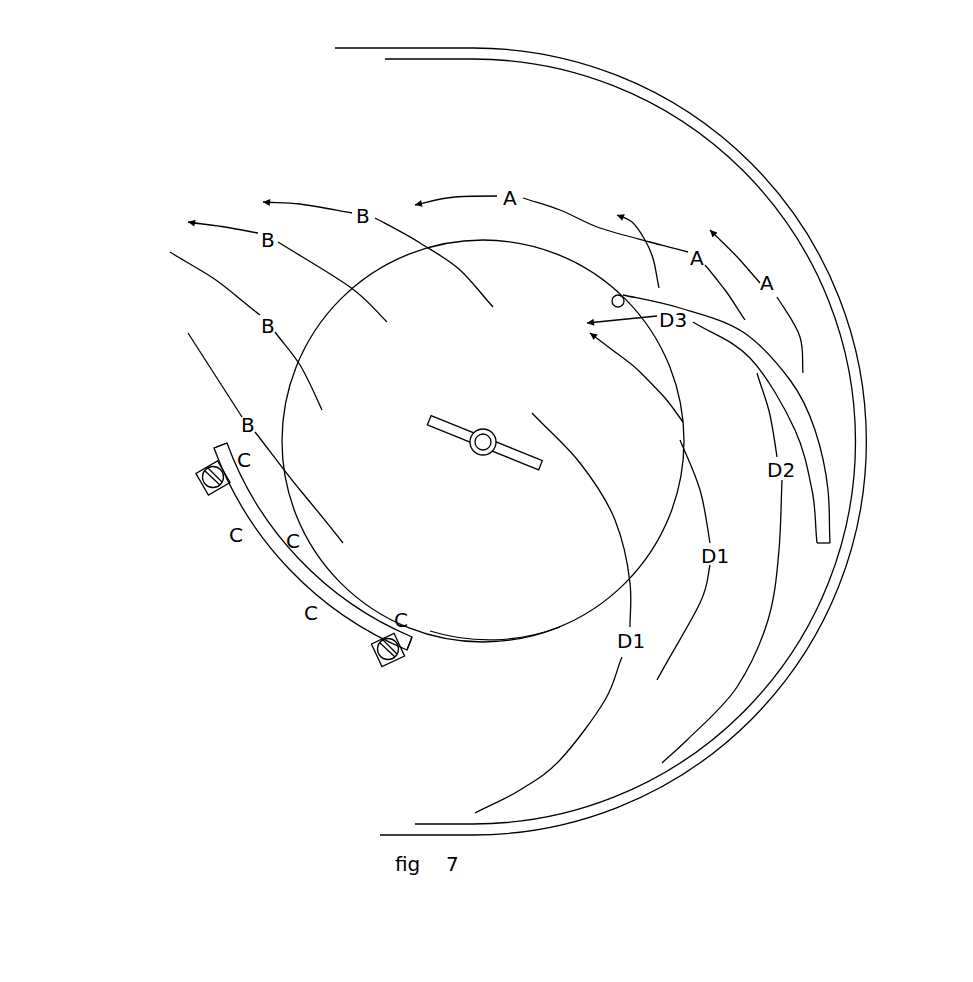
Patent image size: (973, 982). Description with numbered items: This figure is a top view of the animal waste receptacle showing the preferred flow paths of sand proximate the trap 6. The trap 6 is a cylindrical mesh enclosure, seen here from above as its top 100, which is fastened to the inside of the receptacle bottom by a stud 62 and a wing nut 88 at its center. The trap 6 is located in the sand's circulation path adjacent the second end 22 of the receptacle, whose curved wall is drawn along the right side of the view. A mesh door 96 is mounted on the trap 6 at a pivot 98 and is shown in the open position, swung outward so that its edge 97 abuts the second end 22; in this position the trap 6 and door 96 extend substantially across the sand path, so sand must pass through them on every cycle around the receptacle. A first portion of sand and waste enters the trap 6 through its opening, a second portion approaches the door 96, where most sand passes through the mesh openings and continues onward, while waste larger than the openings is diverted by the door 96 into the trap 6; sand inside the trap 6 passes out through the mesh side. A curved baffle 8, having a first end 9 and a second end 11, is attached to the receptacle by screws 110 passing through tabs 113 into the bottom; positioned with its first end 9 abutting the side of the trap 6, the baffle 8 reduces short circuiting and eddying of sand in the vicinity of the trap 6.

The trap 6 is at (519, 646).
The baffle 8 is at (282, 563).
The first end 9 is at (410, 643).
The second end 11 is at (217, 452).
The second end 22 is at (855, 463).
The stud 62 is at (492, 438).
The wing nut 88 is at (452, 438).
The door 96 is at (778, 355).
The edge 97 is at (827, 543).
The pivot 98 is at (623, 296).
The top 100 is at (453, 235).
The screws 110 is at (372, 651).
The tabs 113 is at (376, 658).